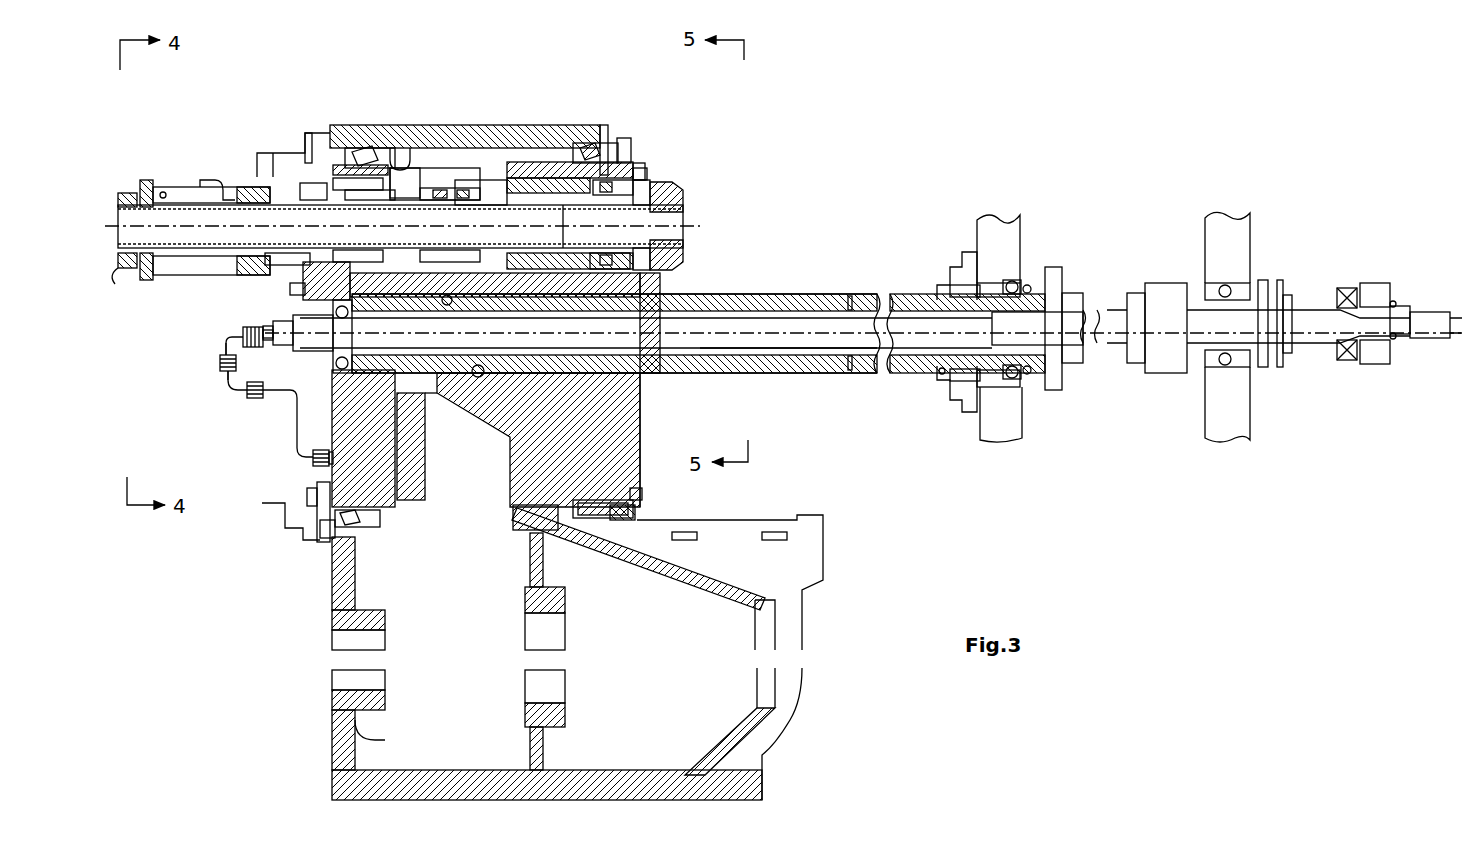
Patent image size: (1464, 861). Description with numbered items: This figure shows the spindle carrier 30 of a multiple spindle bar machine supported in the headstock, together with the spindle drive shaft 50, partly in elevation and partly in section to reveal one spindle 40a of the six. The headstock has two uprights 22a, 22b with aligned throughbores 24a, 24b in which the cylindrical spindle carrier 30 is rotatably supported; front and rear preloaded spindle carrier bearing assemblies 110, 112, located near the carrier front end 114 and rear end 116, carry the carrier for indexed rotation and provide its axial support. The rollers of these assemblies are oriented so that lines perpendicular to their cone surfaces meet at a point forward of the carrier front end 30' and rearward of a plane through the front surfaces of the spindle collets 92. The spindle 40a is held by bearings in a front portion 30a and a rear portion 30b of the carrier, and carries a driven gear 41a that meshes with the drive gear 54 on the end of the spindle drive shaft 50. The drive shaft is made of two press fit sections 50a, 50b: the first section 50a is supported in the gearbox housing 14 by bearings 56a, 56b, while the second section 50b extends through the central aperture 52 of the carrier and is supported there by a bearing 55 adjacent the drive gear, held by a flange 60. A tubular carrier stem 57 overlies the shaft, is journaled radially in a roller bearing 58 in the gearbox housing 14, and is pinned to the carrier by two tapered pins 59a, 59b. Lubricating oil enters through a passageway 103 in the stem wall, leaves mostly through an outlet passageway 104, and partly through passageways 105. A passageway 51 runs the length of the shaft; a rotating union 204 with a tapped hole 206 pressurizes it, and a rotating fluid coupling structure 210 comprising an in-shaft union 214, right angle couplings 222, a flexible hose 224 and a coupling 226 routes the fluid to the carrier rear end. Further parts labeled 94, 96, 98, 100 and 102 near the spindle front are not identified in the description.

The gearbox housing 14 is at (1005, 415).
The headstock upright 22a is at (535, 148).
The headstock upright 22b is at (378, 158).
The throughbore 24a is at (512, 162).
The throughbore 24b is at (438, 178).
The spindle carrier 30 is at (538, 440).
The front end of spindle carrier 30' is at (670, 440).
The front portion of spindle carrier 30a is at (500, 176).
The rear portion of spindle carrier 30b is at (462, 180).
The spindle 40a is at (640, 182).
The driven gear 41a is at (305, 292).
The spindle drive shaft 50 is at (808, 316).
The first section of spindle drive shaft 50a is at (1088, 344).
The second section of spindle drive shaft 50b is at (765, 344).
The passageway 51 is at (818, 335).
The central aperture 52 is at (641, 378).
The drive gear 54 is at (290, 305).
The bearing 55 is at (275, 330).
The bearing 56a is at (1218, 366).
The bearing 56b is at (1350, 361).
The spindle drive shaft carrier stem 57 is at (762, 294).
The roller bearing 58 is at (1017, 285).
The tapered pin 59a is at (482, 377).
The tapered pin 59b is at (452, 297).
The flange 60 is at (340, 380).
The spindle collet 92 is at (687, 210).
The collet 94 is at (688, 248).
The retainer 96 is at (118, 266).
The sleeve 98 is at (178, 192).
The clamp 100 is at (208, 182).
The ring 102 is at (124, 192).
The lubricating oil passageway 103 is at (338, 298).
The outlet passageway 104 is at (437, 395).
The passageways 105 is at (852, 298).
The front spindle carrier bearing assembly 110 is at (620, 146).
The rear spindle carrier bearing assembly 112 is at (305, 138).
The front end of spindle carrier 114 is at (640, 167).
The rear end of spindle carrier 116 is at (292, 437).
The rotating union 204 is at (1430, 338).
The tapped hole 206 is at (1448, 313).
The rotating fluid coupling structure 210 is at (215, 447).
The rotating in-shaft union 214 is at (252, 400).
The right angle couplings 222 is at (228, 380).
The flexible hose 224 is at (313, 462).
The coupling 226 is at (310, 492).